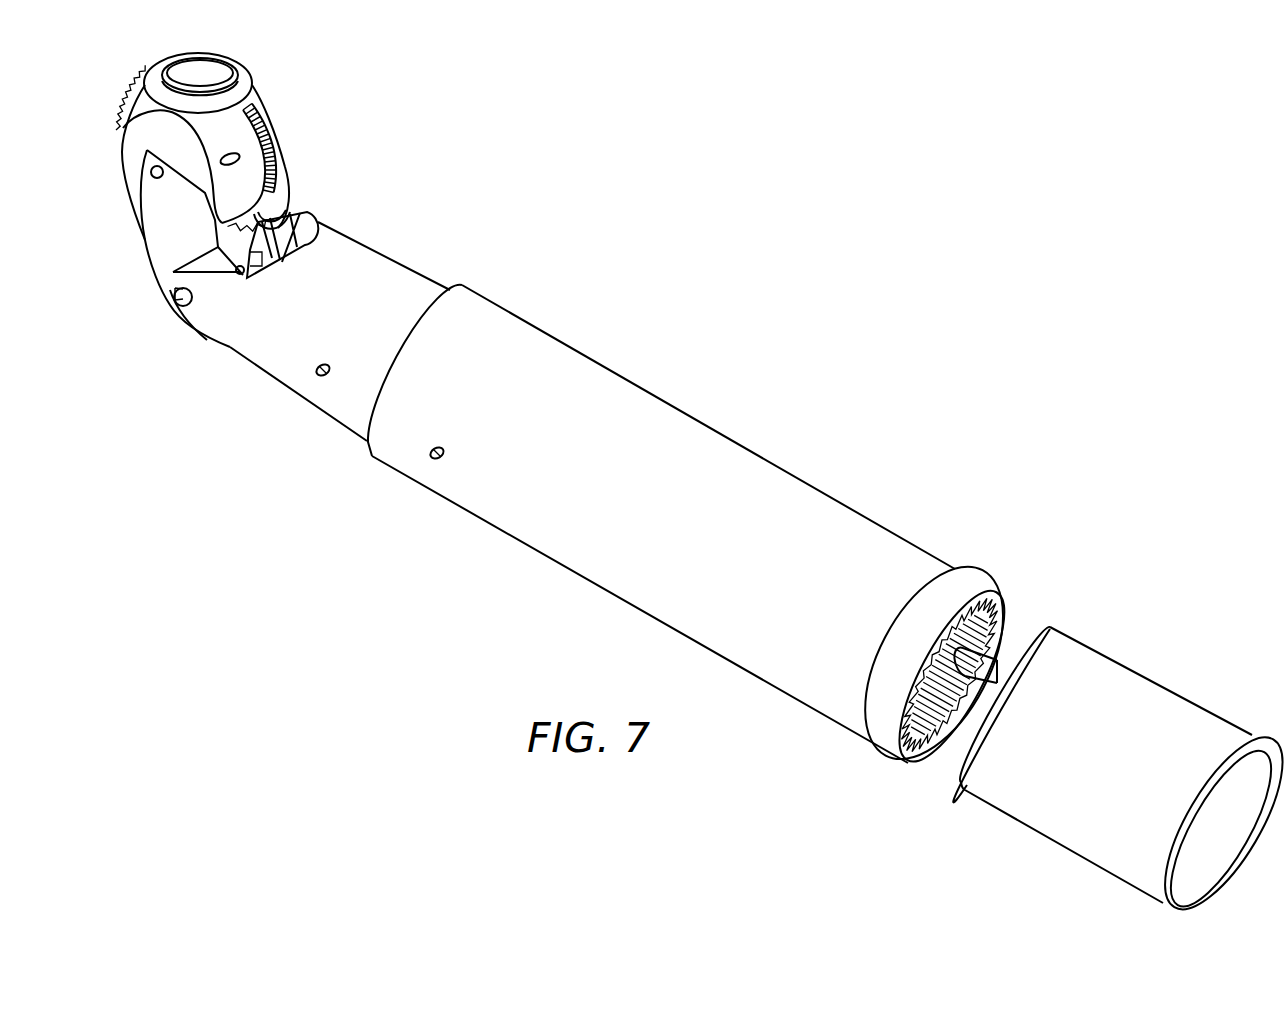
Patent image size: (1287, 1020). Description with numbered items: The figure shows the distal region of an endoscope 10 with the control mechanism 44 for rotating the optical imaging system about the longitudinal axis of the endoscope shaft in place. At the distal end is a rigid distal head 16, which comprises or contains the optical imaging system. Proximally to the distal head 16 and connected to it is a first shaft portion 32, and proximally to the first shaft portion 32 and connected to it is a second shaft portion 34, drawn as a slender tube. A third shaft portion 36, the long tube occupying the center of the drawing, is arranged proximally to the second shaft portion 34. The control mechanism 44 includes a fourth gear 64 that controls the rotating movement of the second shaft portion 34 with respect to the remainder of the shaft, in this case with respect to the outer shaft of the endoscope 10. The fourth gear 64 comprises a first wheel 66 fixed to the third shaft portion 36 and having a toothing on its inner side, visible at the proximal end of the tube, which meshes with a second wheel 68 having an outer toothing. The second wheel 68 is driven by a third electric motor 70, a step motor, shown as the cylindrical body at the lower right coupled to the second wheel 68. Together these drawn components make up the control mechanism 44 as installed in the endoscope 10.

The endoscope 10 is at (776, 338).
The rigid distal head 16 is at (122, 127).
The first shaft portion 32 is at (160, 252).
The second shaft portion 34 is at (277, 363).
The third shaft portion 36 is at (538, 532).
The control mechanism 44 is at (969, 512).
The fourth gear 64 is at (1050, 582).
The first wheel 66 is at (882, 733).
The second wheel 68 is at (945, 695).
The third electric motor 70 is at (1058, 815).